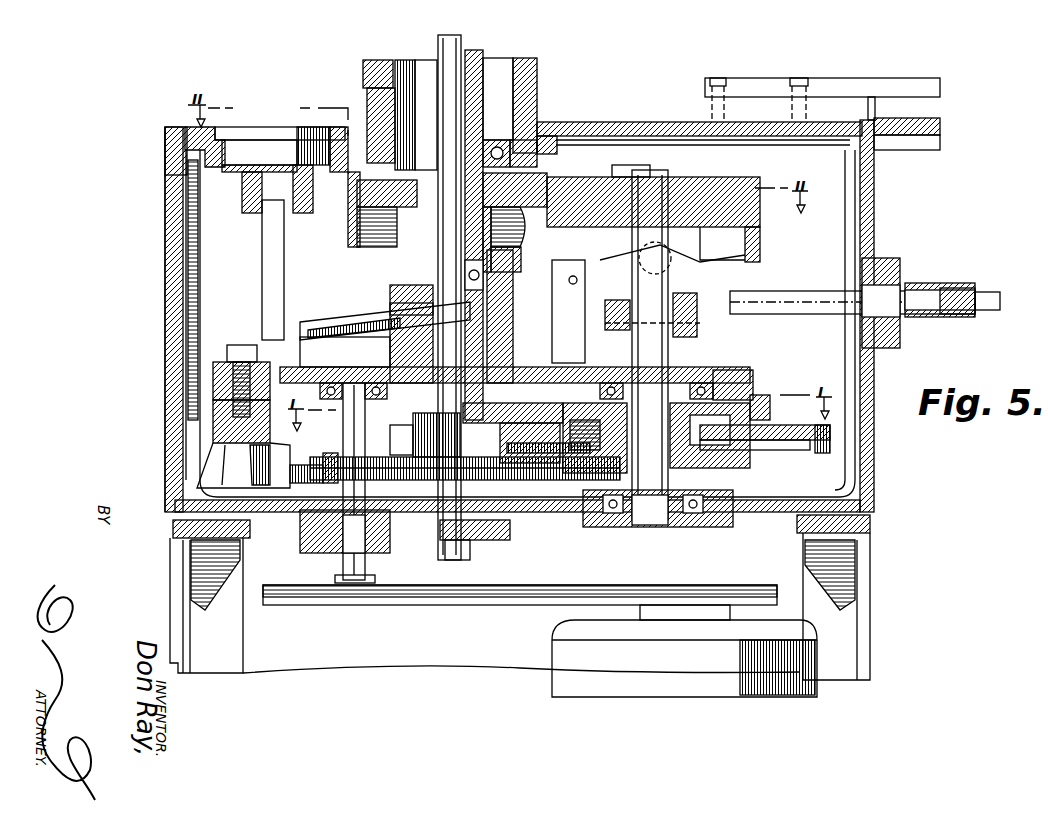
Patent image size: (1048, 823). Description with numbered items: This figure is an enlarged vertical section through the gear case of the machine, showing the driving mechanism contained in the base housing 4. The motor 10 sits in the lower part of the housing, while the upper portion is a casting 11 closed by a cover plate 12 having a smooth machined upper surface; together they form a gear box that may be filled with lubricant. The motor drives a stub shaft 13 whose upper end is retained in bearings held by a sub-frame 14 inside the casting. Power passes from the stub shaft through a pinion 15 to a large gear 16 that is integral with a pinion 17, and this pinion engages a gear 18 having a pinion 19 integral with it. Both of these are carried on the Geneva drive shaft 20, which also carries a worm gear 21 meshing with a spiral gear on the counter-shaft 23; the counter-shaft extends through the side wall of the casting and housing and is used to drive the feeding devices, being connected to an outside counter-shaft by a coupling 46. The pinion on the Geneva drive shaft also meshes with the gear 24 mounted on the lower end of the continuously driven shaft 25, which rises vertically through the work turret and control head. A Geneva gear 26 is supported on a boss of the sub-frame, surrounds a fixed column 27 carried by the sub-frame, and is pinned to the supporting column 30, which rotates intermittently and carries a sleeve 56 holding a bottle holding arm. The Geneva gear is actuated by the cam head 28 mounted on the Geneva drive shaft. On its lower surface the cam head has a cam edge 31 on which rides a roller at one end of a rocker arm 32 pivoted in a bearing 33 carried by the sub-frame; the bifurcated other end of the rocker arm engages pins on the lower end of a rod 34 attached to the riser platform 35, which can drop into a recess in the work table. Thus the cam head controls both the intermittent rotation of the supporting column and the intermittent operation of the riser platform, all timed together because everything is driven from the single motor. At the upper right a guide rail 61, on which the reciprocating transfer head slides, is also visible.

The base housing 4 is at (160, 388).
The motor 10 is at (590, 680).
The casting 11 is at (170, 430).
The cover plate 12 is at (170, 132).
The stub shaft 13 is at (343, 562).
The sub-frame 14 is at (368, 355).
The pinion 15 is at (322, 468).
The large gear 16 is at (565, 482).
The pinion 17 is at (412, 438).
The gear 18 is at (808, 452).
The pinion 19 is at (760, 400).
The Geneva drive shaft 20 is at (660, 300).
The worm gear 21 is at (700, 305).
The counter-shaft 23 is at (790, 295).
The gear 24 is at (530, 412).
The shaft 25 is at (447, 40).
The Geneva gear 26 is at (617, 122).
The fixed column 27 is at (478, 55).
The cam head 28 is at (745, 178).
The supporting column 30 is at (367, 90).
The cam edge 31 is at (672, 260).
The rocker arm 32 is at (320, 320).
The bearing 33 is at (552, 318).
The rod 34 is at (265, 285).
The riser platform 35 is at (253, 133).
The coupling 46 is at (940, 286).
The sleeve 56 is at (363, 66).
The guide rail 61 is at (925, 80).